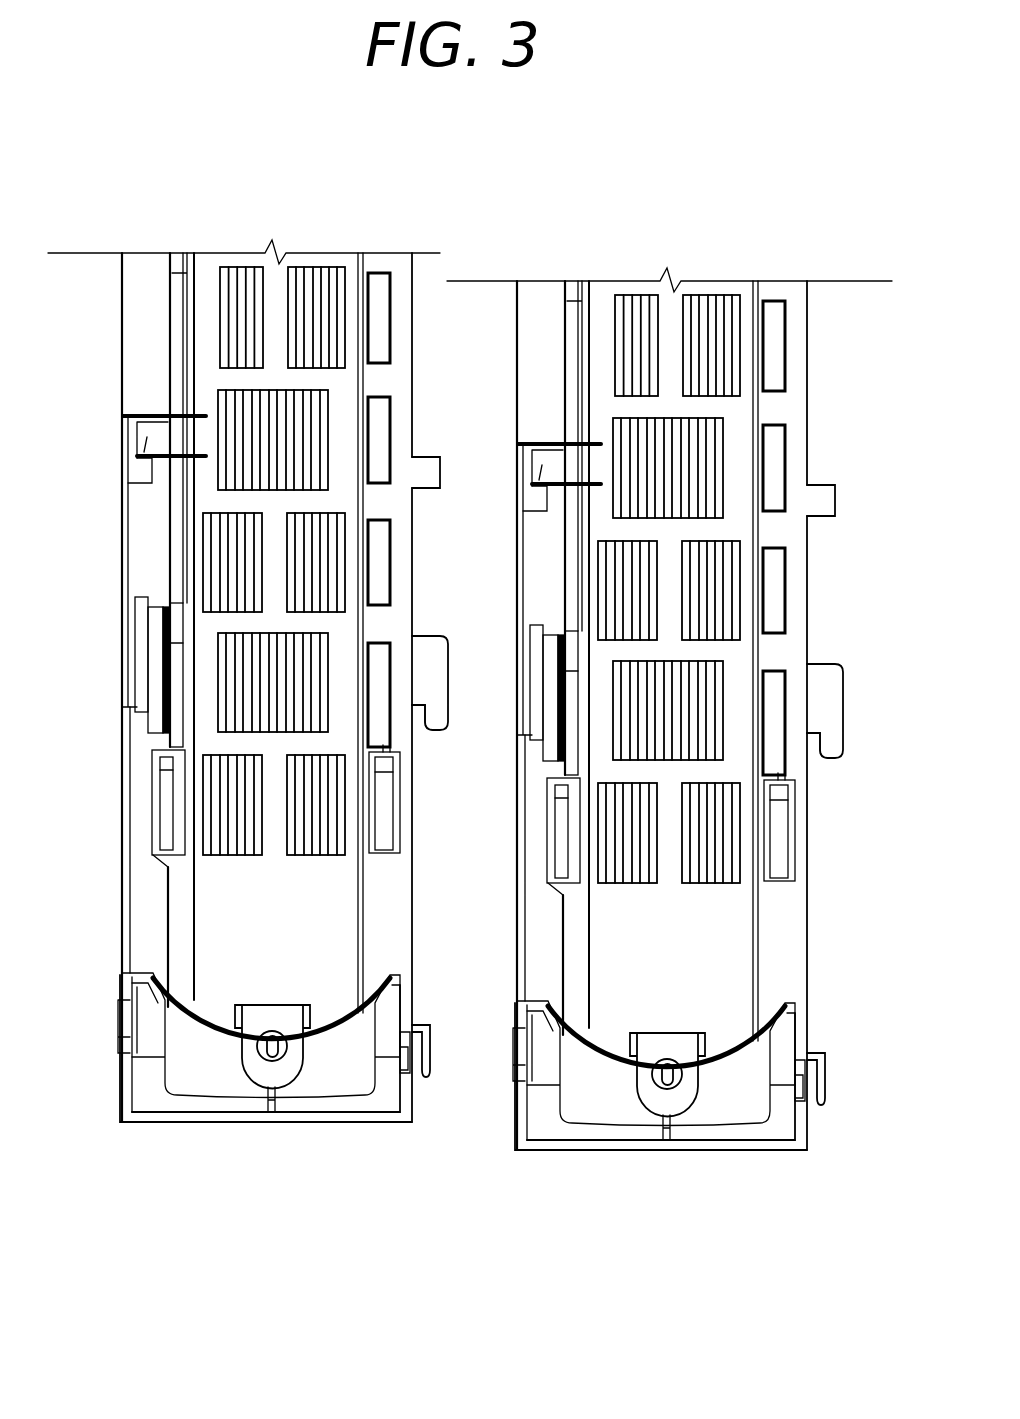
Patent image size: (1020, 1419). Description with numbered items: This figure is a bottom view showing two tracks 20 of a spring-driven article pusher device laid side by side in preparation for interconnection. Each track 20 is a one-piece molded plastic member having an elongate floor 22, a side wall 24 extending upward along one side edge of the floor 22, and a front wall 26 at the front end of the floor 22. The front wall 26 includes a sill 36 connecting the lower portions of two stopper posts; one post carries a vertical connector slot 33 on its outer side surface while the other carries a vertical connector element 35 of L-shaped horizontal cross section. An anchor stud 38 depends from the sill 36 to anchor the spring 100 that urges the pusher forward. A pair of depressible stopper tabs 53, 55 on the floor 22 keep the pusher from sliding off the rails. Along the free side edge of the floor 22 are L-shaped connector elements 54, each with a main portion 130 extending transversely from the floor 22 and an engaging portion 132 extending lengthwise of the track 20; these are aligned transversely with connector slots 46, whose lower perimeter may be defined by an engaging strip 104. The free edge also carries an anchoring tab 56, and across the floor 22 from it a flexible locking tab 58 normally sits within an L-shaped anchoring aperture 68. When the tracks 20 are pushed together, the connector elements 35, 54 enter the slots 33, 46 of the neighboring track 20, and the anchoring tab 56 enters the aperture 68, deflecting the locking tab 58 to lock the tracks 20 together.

The track 20 is at (140, 1125).
The floor 22 is at (285, 922).
The side wall 24 is at (125, 450).
The front wall 26 is at (277, 1122).
The connector slot 33 is at (128, 1020).
The connector element 35 is at (432, 1050).
The sill 36 is at (352, 1055).
The anchor stud 38 is at (262, 1050).
The connector slot 46 is at (128, 640).
The depressible stopper tab 53 is at (165, 793).
The connector element 54 is at (500, 678).
The depressible stopper tab 55 is at (383, 812).
The anchoring tab 56 is at (428, 472).
The locking tab 58 is at (137, 458).
The anchoring aperture 68 is at (140, 478).
The spring 100 is at (253, 1023).
The engaging strip 104 is at (145, 618).
The main portion 130 is at (423, 650).
The engaging portion 132 is at (433, 727).